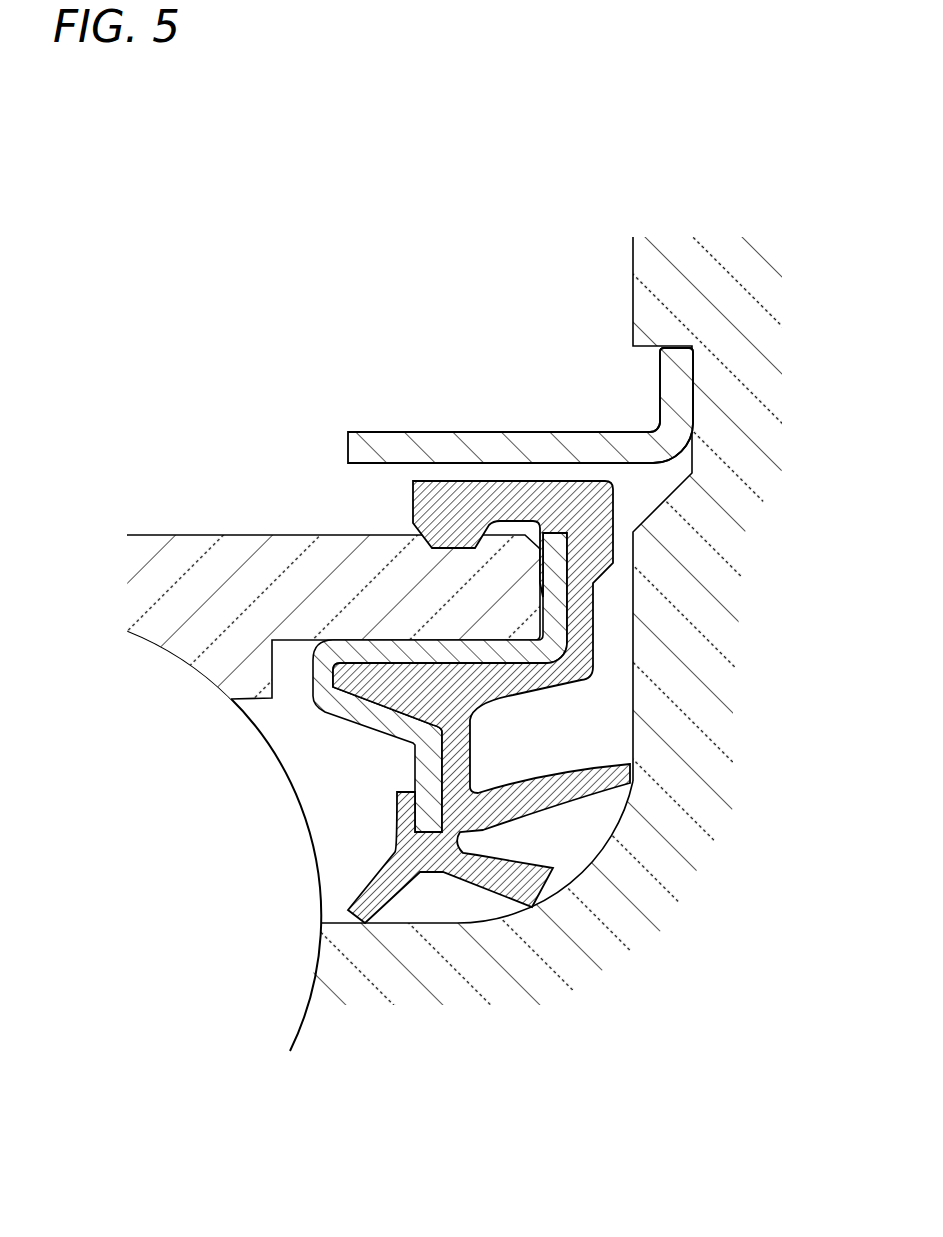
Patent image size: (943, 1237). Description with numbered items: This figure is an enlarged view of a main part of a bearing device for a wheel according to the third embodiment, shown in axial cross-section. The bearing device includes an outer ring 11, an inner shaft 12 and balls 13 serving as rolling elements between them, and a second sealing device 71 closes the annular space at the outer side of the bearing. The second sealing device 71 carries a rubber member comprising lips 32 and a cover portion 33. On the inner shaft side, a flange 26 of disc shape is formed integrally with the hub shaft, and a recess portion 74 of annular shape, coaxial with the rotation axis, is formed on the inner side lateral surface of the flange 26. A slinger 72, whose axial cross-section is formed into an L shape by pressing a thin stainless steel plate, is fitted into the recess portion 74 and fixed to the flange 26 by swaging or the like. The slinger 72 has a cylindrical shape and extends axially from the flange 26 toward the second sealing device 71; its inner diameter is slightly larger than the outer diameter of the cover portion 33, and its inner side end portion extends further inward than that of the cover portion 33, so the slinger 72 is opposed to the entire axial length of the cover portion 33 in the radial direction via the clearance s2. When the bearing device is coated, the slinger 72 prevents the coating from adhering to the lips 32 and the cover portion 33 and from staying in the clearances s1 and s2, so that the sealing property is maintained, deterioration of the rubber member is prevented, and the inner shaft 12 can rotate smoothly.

The outer ring 11 is at (187, 550).
The inner shaft 12 is at (570, 971).
The balls 13 is at (287, 978).
The flange 26 is at (632, 292).
The lips 32 is at (595, 798).
The cover portion 33 is at (440, 497).
The second sealing device 71 is at (282, 496).
The slinger 72 is at (510, 440).
The recess portion 74 is at (648, 353).
The clearance s1 is at (615, 603).
The clearance s2 is at (452, 470).